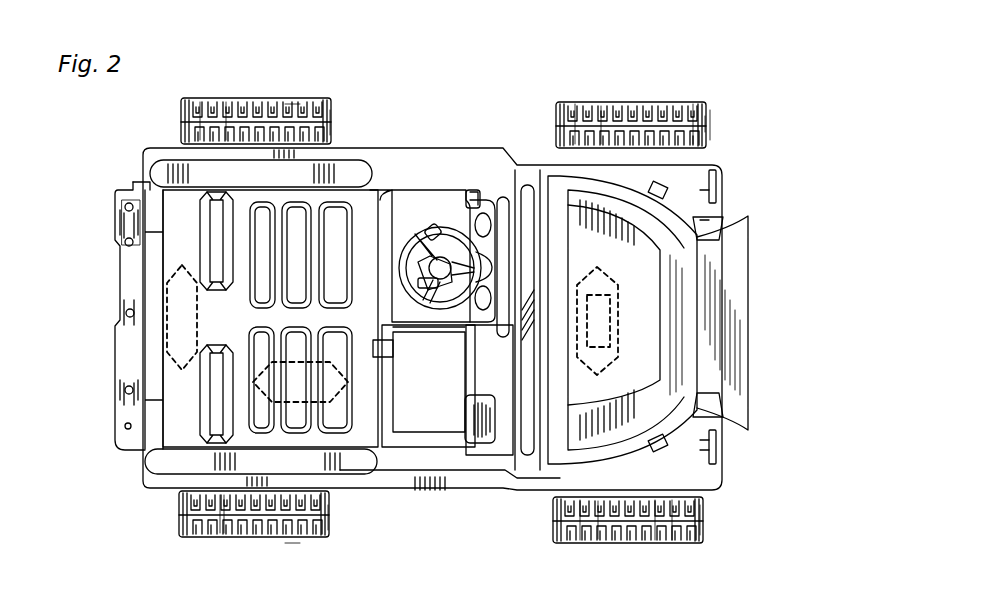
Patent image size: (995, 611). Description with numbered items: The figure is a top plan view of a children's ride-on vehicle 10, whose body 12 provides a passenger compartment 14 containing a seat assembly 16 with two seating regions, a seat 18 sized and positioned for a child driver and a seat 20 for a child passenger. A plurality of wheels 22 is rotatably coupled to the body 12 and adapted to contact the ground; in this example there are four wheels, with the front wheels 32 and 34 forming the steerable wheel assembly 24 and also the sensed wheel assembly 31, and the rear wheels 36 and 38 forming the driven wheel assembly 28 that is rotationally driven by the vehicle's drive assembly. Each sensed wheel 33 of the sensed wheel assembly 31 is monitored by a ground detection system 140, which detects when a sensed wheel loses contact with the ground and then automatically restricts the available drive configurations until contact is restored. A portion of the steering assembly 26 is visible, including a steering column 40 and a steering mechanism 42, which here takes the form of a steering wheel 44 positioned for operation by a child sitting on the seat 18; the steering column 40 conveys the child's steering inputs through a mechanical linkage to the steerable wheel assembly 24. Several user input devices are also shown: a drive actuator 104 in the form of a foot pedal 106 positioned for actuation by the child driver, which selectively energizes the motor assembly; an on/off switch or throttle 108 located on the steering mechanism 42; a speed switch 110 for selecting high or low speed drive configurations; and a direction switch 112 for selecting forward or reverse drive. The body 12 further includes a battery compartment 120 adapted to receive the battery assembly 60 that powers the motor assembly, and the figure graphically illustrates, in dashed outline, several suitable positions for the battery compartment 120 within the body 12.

The children's ride-on vehicle 10 is at (790, 196).
The body 12 is at (752, 283).
The passenger compartment 14 is at (431, 188).
The seat assembly 16 is at (198, 212).
The seat 18 is at (215, 213).
The seat 20 is at (215, 385).
The wheels 22 is at (155, 123).
The steerable wheel assembly 24 is at (630, 100).
The steering assembly 26 is at (493, 282).
The driven wheel assembly 28 is at (287, 102).
The sensed wheel assembly 31 is at (695, 100).
The front wheel 32 is at (573, 102).
The sensed wheel 33 is at (704, 116).
The front wheel 34 is at (578, 548).
The rear wheel 36 is at (196, 104).
The rear wheel 38 is at (220, 544).
The steering column 40 is at (487, 267).
The steering mechanism 42 is at (410, 317).
The steering wheel 44 is at (447, 320).
The battery assembly 60 is at (610, 306).
The drive actuator 104 is at (420, 282).
The foot pedal 106 is at (423, 288).
The on/off switch or throttle 108 is at (425, 232).
The speed switch 110 is at (472, 188).
The direction switch 112 is at (478, 188).
The battery compartment 120 is at (176, 366).
The ground detection system 140 is at (342, 128).